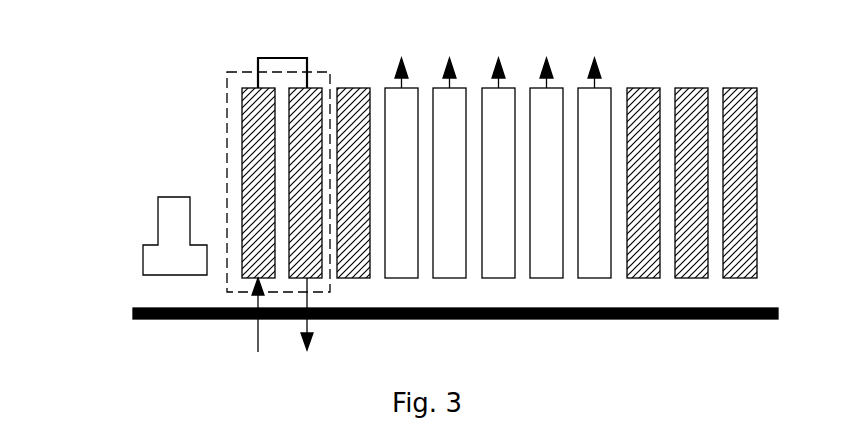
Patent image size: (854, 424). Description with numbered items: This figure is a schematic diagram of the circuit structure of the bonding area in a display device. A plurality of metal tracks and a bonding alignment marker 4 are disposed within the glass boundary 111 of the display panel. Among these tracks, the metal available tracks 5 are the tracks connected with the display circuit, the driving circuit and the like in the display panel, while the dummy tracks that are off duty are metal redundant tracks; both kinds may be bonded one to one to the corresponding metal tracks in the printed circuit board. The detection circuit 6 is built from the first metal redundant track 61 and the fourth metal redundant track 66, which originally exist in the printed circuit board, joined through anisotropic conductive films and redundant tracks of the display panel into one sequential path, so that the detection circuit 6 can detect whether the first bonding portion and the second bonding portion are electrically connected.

The detection circuit 6 is at (235, 70).
The first metal redundant track 61 is at (258, 103).
The fourth metal redundant track 66 is at (312, 103).
The metal available track 5 is at (403, 110).
The bonding alignment marker 4 is at (172, 213).
The glass boundary 111 is at (148, 308).